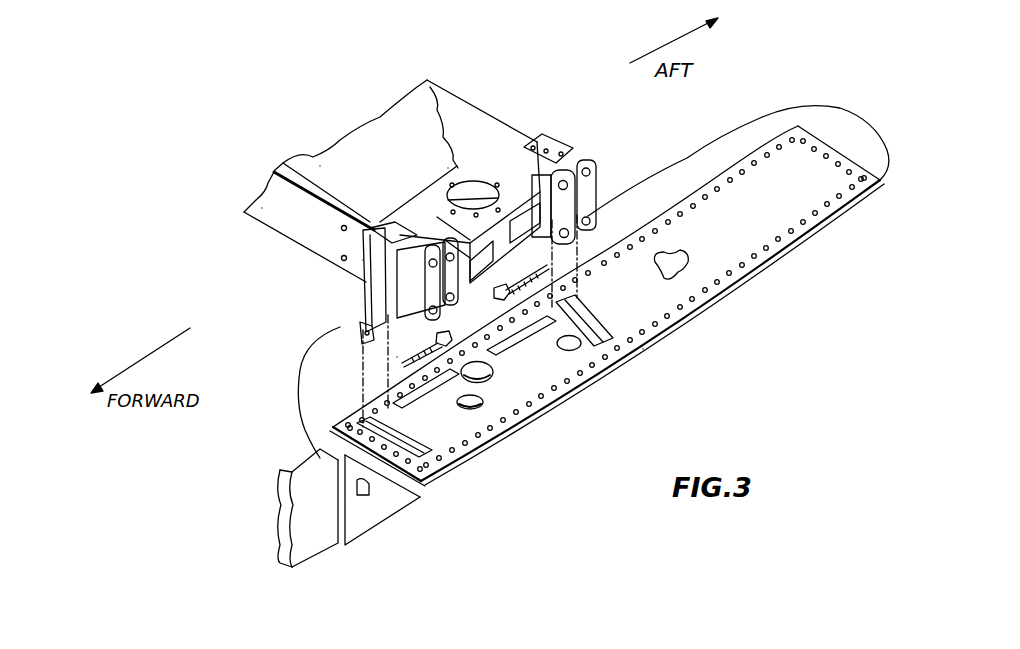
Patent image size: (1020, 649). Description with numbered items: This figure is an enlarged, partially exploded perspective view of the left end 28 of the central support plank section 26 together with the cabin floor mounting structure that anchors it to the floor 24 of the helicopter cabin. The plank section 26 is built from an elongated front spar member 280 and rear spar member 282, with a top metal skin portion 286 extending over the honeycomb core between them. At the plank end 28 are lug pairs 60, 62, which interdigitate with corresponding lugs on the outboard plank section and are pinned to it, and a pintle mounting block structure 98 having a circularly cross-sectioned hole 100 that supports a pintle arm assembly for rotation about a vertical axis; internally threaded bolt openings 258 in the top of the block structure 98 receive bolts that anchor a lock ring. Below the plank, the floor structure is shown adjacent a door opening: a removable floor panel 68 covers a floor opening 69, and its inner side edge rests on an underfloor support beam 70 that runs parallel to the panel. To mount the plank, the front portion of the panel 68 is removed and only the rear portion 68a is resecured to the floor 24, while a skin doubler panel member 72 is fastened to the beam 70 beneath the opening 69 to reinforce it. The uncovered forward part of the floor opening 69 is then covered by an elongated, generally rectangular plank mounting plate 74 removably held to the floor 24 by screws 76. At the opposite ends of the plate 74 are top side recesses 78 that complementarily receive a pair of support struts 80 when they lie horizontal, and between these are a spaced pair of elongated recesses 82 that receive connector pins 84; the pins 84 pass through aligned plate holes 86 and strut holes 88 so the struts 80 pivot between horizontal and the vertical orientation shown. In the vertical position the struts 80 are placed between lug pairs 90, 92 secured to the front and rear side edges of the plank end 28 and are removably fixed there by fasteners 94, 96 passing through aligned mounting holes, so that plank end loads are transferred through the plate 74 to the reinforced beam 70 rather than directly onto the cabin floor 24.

The floor 24 is at (700, 167).
The central support plank section 26 is at (347, 134).
The left end of the central plank section 28 is at (318, 252).
The lug pair 60 is at (582, 207).
The lug pair 62 is at (597, 196).
The removable floor panel 68 is at (778, 132).
The rear portion of the floor panel 68a is at (797, 208).
The floor opening 69 is at (678, 256).
The underfloor support beam 70 is at (297, 550).
The skin doubler panel member 72 is at (357, 517).
The plank mounting plate 74 is at (577, 362).
The screws 76 is at (531, 420).
The top side recesses 78 is at (645, 351).
The support struts 80 is at (360, 296).
The elongated recesses 82 is at (513, 337).
The connector pins 84 is at (532, 265).
The plate holes 86 is at (590, 317).
The strut holes 88 is at (360, 327).
The lug pair 90 is at (551, 137).
The lug pair 92 is at (564, 147).
The fastener 94 is at (434, 279).
The fastener 96 is at (363, 260).
The pintle mounting block structure 98 is at (448, 166).
The hole 100 is at (478, 175).
The internally threaded bolt openings 258 is at (456, 195).
The front spar member 280 is at (262, 208).
The rear spar member 282 is at (493, 132).
The top metal skin portion 286 is at (320, 166).